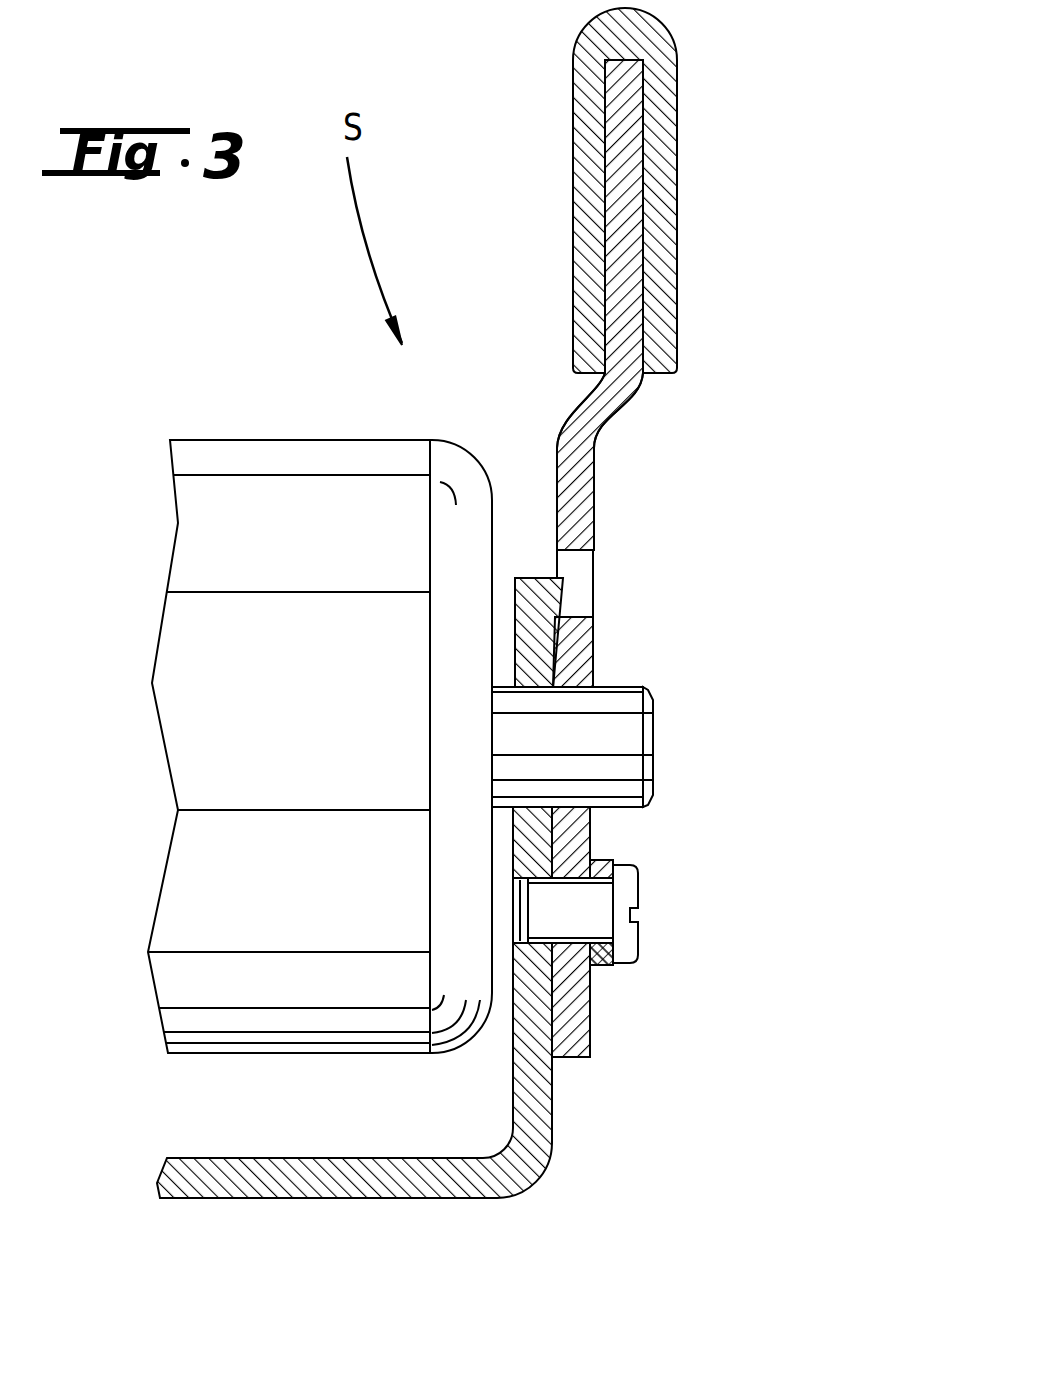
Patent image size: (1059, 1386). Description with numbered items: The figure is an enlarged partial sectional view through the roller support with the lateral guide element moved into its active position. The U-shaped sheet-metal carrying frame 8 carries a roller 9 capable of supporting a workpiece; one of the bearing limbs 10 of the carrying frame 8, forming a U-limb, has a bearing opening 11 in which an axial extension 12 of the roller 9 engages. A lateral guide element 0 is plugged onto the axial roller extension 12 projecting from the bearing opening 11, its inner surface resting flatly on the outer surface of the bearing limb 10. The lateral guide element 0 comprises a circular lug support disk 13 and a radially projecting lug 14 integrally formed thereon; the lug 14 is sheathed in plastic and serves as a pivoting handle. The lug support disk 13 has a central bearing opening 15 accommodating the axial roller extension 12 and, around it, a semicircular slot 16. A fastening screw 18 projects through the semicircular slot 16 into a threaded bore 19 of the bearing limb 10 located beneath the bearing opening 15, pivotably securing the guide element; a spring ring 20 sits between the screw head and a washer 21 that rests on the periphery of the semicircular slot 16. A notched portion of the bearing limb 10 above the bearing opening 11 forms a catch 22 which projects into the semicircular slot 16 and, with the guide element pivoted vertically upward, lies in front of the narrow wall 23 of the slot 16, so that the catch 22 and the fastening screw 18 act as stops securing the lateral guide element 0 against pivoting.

The lateral guide element 0 is at (627, 103).
The lug 14 is at (622, 205).
The narrow wall 23 is at (565, 560).
The semicircular slot 16 is at (593, 560).
The catch 22 is at (560, 588).
The bearing opening 11 is at (550, 676).
The axial extension 12 is at (618, 713).
The central bearing opening 15 is at (590, 826).
The fastening screw 18 is at (627, 937).
The spring ring 20 is at (617, 955).
The washer 21 is at (600, 970).
The lug support disk 13 is at (574, 1018).
The bearing limb 10 is at (530, 1093).
The carrying frame 8 is at (262, 1178).
The roller 9 is at (232, 677).
The threaded bore 19 is at (513, 885).